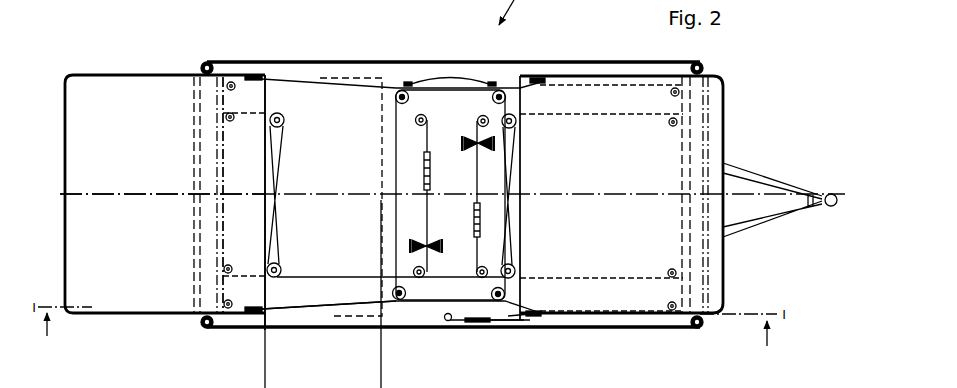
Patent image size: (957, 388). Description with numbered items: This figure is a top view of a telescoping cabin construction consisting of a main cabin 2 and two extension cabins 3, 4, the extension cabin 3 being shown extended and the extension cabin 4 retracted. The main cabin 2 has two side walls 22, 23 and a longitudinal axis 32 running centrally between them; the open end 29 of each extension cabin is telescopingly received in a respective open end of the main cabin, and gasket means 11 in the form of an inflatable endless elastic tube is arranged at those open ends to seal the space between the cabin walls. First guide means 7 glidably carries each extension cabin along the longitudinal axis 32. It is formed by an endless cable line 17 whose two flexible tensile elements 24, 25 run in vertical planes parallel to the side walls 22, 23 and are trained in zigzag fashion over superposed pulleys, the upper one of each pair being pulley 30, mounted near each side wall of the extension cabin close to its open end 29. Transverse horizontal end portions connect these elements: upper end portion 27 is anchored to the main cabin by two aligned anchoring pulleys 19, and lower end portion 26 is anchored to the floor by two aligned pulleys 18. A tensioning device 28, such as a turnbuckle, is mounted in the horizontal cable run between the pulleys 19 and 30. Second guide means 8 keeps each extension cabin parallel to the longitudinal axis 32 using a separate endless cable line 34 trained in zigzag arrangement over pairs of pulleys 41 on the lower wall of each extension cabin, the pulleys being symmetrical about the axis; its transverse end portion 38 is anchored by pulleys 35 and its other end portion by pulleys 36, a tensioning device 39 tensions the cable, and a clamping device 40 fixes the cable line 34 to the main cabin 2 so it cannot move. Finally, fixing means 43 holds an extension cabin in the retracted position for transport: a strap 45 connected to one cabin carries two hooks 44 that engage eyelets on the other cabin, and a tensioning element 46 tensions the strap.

The main cabin 2 is at (467, 59).
The extension cabin 3 is at (120, 72).
The extension cabin 4 is at (728, 116).
The first guide means 7 is at (517, 79).
The second guide means 8 is at (279, 166).
The gasket means 11 is at (214, 63).
The endless cable line 17 is at (301, 79).
The anchoring pulley 18 is at (235, 90).
The anchoring pulley 19 is at (409, 98).
The side wall 22 is at (405, 59).
The side wall 23 is at (347, 330).
The flexible tensile element 24 is at (312, 307).
The flexible tensile element 25 is at (370, 91).
The lower cable line end portion 26 is at (226, 212).
The cable line end portion 27 is at (506, 292).
The tensioning device 28 is at (477, 80).
The open end 29 is at (269, 213).
The upper pulley 30 is at (263, 81).
The longitudinal axis 32 is at (101, 191).
The second cable line 34 is at (355, 276).
The anchoring pulley 35 is at (419, 127).
The anchoring pulley 36 is at (233, 122).
The cable line end portion 38 is at (426, 192).
The tensioning device 39 is at (472, 204).
The clamping device 40 is at (470, 140).
The pulley 41 is at (285, 121).
The fixing means 43 is at (476, 324).
The hook 44 is at (447, 322).
The strap 45 is at (512, 322).
The tensioning element 46 is at (487, 324).